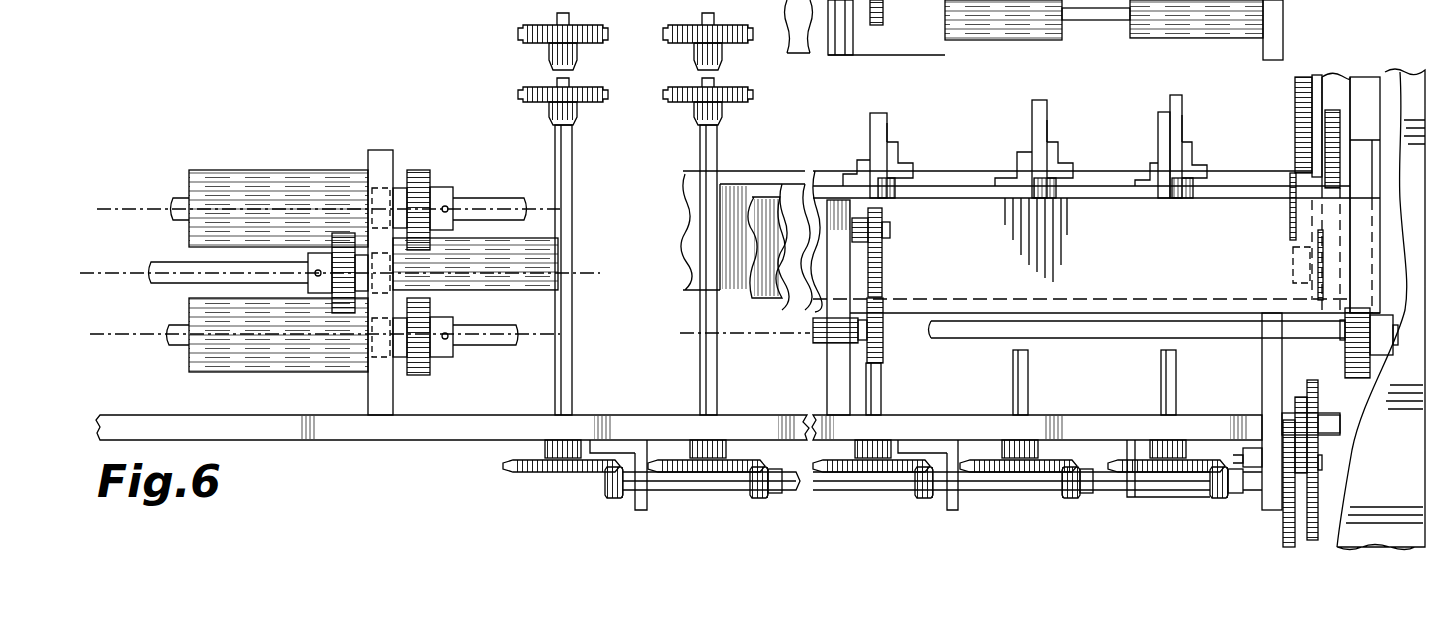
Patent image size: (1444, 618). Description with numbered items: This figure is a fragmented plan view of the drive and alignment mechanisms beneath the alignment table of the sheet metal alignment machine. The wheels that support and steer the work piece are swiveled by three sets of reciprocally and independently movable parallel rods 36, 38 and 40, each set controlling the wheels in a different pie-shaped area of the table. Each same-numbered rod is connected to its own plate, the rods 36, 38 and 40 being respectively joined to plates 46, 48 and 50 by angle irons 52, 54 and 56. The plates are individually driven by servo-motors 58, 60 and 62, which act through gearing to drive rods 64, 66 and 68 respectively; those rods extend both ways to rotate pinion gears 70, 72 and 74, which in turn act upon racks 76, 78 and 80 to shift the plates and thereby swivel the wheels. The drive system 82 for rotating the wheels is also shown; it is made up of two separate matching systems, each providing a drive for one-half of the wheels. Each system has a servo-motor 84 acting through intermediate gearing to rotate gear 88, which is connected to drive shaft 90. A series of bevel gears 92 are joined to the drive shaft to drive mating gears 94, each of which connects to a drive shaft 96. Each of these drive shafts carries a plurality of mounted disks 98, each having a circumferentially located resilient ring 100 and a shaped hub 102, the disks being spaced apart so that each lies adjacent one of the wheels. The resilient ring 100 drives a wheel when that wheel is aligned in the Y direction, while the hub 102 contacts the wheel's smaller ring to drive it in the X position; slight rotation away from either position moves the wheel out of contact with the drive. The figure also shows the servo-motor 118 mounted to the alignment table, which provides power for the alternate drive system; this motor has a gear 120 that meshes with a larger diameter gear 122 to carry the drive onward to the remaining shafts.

The rod 36 is at (1200, 92).
The rod 38 is at (1154, 97).
The rod 40 is at (1228, 168).
The plate 46 is at (692, 178).
The plate 48 is at (760, 300).
The plate 50 is at (790, 322).
The angle iron 52 is at (1200, 126).
The angle iron 54 is at (1145, 152).
The angle iron 56 is at (1045, 180).
The servo-motor 58 is at (262, 172).
The servo-motor 60 is at (530, 238).
The servo-motor 62 is at (200, 368).
The rod 64 is at (474, 176).
The rod 66 is at (588, 252).
The rod 68 is at (488, 362).
The pinion gear 70 is at (1290, 175).
The pinion gear 72 is at (1320, 292).
The pinion gear 74 is at (1342, 360).
The rack 76 is at (1295, 105).
The rack 78 is at (1335, 112).
The rack 80 is at (1388, 200).
The drive system 82 is at (1220, 502).
The servo-motor 84 is at (1150, 22).
The gear 88 is at (1283, 527).
The drive shaft 90 is at (1150, 487).
The bevel gear 92 is at (1082, 516).
The mating gear 94 is at (990, 508).
The drive shaft 96 is at (1192, 370).
The disk 98 is at (607, 45).
The resilient ring 100 is at (780, 110).
The hub 102 is at (750, 134).
The servo-motor 118 is at (827, 380).
The gear 120 is at (905, 8).
The gear 122 is at (880, 258).